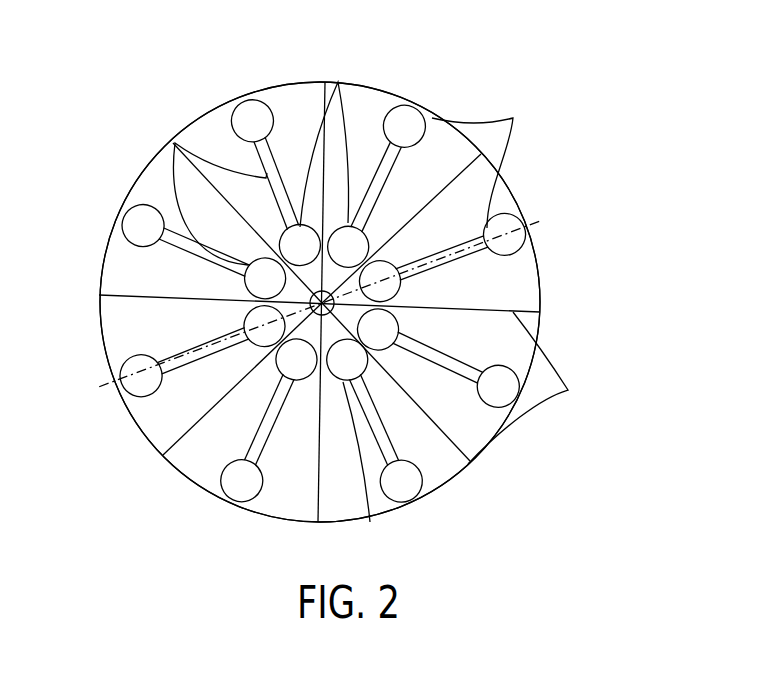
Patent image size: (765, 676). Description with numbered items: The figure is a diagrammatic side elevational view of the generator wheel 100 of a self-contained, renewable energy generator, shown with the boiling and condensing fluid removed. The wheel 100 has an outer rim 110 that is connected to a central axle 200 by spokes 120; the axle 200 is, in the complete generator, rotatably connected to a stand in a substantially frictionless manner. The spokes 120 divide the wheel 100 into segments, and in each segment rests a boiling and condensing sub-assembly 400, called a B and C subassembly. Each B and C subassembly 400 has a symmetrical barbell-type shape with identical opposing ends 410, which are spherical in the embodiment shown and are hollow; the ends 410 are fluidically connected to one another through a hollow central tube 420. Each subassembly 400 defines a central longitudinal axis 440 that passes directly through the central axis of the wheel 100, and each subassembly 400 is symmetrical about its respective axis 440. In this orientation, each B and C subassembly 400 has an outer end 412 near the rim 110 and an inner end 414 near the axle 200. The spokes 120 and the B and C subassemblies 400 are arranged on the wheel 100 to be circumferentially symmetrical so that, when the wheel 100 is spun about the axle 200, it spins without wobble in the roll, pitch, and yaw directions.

The generator wheel 100 is at (620, 170).
The outer rim 110 is at (98, 337).
The spokes 120 is at (351, 302).
The axle 200 is at (244, 284).
The boiling and condensing sub-assembly 400 is at (163, 397).
The opposing ends 410 is at (370, 522).
The outer end 412 is at (513, 118).
The inner end 414 is at (338, 82).
The hollow central tube 420 is at (175, 143).
The central longitudinal axis 440 is at (530, 228).